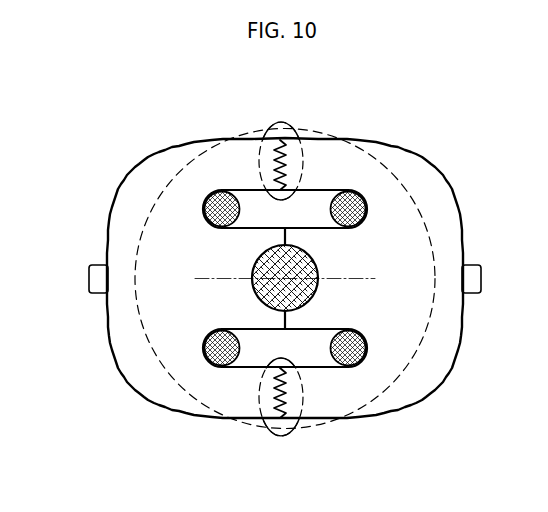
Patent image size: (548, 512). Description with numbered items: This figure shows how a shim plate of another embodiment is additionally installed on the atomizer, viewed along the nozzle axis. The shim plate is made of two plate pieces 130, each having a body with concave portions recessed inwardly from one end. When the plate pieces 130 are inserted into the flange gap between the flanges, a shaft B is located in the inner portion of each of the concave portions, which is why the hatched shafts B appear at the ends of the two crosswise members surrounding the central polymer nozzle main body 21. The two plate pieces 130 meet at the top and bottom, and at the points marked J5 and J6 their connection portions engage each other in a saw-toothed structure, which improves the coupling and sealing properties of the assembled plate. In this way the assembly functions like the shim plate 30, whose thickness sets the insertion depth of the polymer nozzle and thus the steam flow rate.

The plate piece 130 is at (101, 169).
The shim plate 30 is at (325, 138).
The shaft B is at (217, 190).
The main body of the polymer nozzle part 21 is at (258, 257).
The saw-toothed engagement J5 is at (282, 122).
The saw-toothed engagement J6 is at (281, 437).